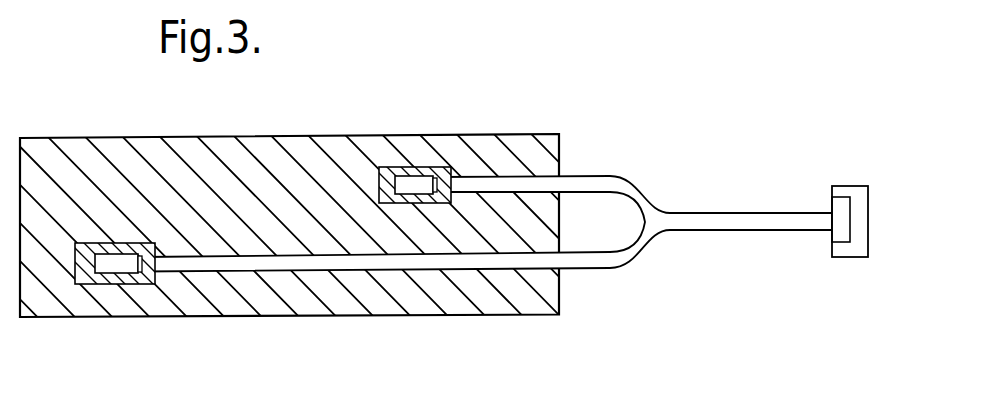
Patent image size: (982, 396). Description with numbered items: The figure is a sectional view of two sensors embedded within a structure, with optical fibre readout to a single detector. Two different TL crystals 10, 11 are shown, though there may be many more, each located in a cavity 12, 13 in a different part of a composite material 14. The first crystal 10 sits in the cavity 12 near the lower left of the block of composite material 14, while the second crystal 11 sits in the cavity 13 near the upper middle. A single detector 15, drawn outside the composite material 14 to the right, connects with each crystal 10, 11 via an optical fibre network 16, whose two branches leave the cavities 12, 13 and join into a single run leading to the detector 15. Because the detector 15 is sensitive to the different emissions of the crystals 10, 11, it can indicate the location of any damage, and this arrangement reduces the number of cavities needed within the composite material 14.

The TL crystal 10 is at (125, 268).
The TL crystal 11 is at (417, 181).
The cavity 12 is at (97, 284).
The cavity 13 is at (382, 180).
The composite material 14 is at (117, 150).
The detector 15 is at (850, 190).
The optical fibre network 16 is at (630, 183).